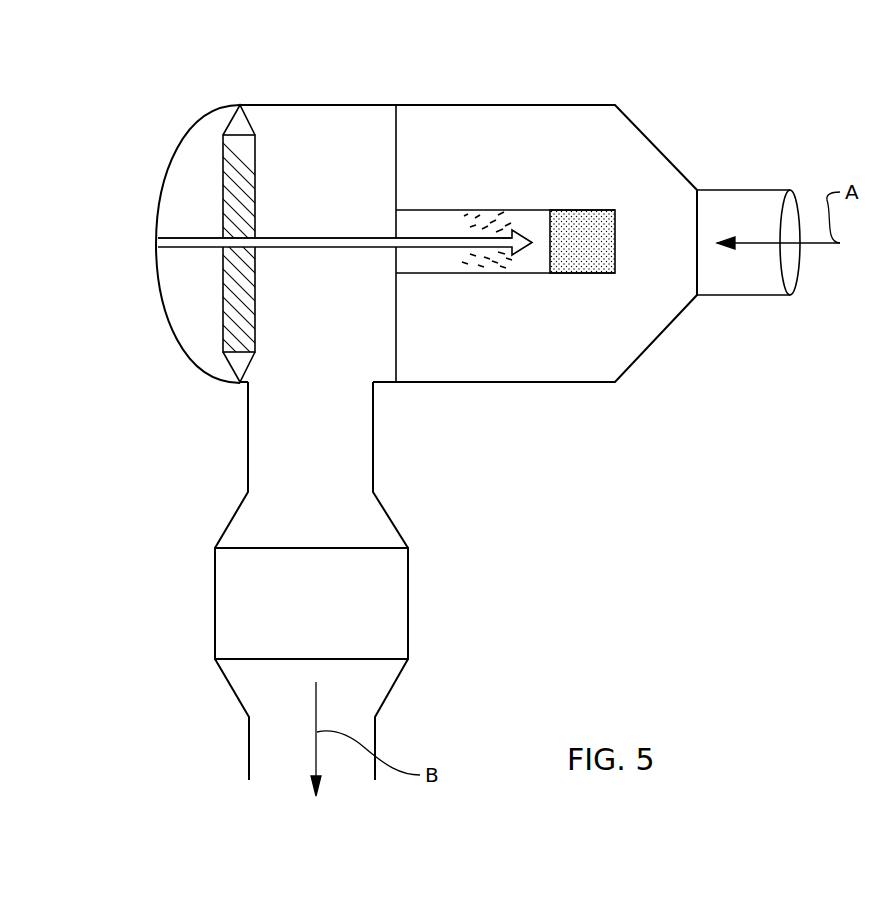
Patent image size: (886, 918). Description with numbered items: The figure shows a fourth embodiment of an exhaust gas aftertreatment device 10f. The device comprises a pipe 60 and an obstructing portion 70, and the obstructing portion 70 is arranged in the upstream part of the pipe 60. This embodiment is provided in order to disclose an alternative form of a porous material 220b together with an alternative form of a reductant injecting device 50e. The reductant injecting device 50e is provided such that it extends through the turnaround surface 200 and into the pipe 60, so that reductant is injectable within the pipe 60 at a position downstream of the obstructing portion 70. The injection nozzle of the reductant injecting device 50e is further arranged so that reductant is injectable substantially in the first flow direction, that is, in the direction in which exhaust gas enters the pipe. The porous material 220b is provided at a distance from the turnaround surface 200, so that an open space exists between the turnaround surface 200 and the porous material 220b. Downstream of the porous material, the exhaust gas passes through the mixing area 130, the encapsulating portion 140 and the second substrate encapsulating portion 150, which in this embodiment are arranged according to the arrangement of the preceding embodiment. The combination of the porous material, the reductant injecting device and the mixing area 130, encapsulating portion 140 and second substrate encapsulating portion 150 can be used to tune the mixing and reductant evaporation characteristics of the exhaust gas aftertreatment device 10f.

The exhaust gas aftertreatment device 10f is at (673, 143).
The porous material 220b is at (237, 193).
The turnaround surface 200 is at (160, 266).
The reductant injecting device 50e is at (313, 250).
The pipe 60 is at (528, 263).
The obstructing portion 70 is at (580, 263).
The mixing area 130 is at (248, 452).
The encapsulating portion 140 is at (215, 605).
The second substrate encapsulating portion 150 is at (249, 746).